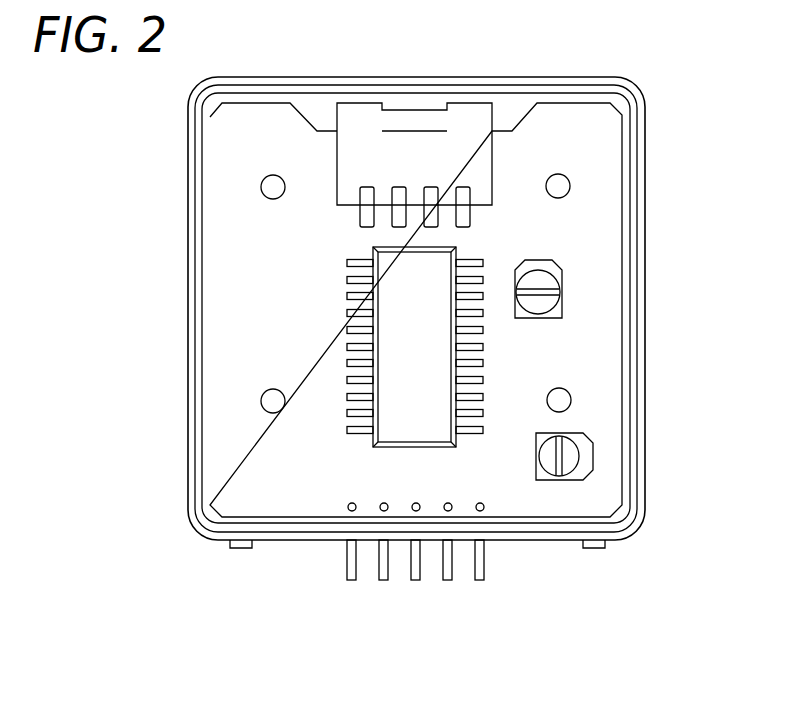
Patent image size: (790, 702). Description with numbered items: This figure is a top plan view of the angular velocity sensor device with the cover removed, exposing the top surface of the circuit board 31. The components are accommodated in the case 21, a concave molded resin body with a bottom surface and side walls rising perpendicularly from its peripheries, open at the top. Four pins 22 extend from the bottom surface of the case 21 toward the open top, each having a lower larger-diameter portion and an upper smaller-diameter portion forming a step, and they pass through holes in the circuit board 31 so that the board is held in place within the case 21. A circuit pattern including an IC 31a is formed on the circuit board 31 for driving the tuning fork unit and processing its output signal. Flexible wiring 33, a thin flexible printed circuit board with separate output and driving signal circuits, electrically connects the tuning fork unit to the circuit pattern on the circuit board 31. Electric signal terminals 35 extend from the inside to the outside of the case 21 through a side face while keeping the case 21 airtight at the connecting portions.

The case 21 is at (640, 467).
The pins 22 is at (570, 186).
The circuit board 31 is at (233, 265).
The IC 31a is at (400, 412).
The flexible wiring 33 is at (468, 118).
The electric signal terminals 35 is at (488, 601).